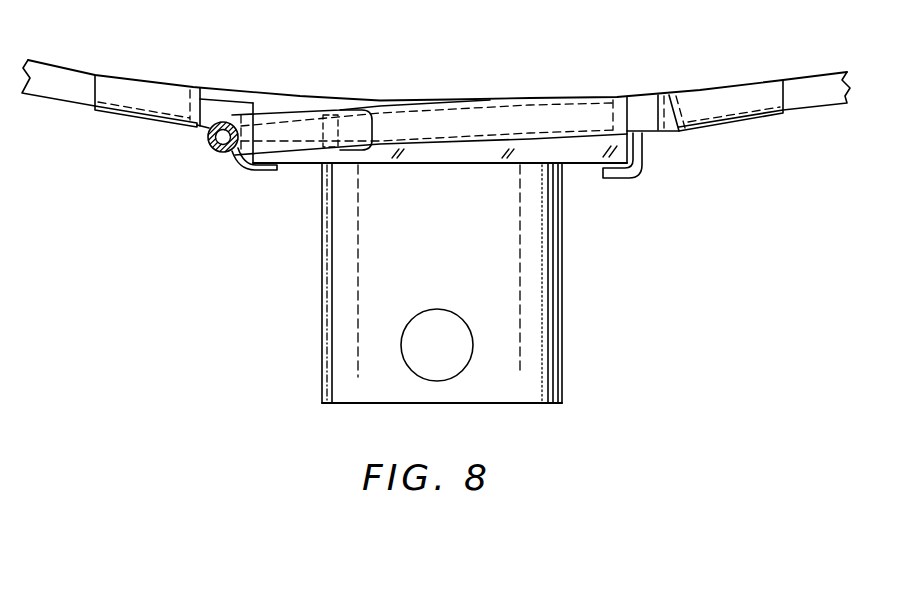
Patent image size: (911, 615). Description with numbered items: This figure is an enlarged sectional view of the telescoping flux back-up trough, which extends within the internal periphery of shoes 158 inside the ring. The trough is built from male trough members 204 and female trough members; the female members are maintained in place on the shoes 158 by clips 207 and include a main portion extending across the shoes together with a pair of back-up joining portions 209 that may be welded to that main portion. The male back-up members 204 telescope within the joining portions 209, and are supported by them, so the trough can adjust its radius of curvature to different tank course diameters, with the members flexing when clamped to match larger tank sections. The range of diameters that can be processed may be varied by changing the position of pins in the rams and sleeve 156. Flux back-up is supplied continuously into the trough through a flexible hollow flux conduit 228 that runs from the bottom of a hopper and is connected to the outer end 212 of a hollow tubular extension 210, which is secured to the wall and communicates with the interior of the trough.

The male trough member 204 is at (80, 77).
The back-up joining portion 209 is at (117, 115).
The flexible hollow flux conduit 228 is at (272, 118).
The hollow tubular extension 210 is at (392, 122).
The outer end of tubular extension 212 is at (360, 112).
The clip 207 is at (267, 173).
The shoe 158 is at (583, 157).
The sleeve 156 is at (342, 270).